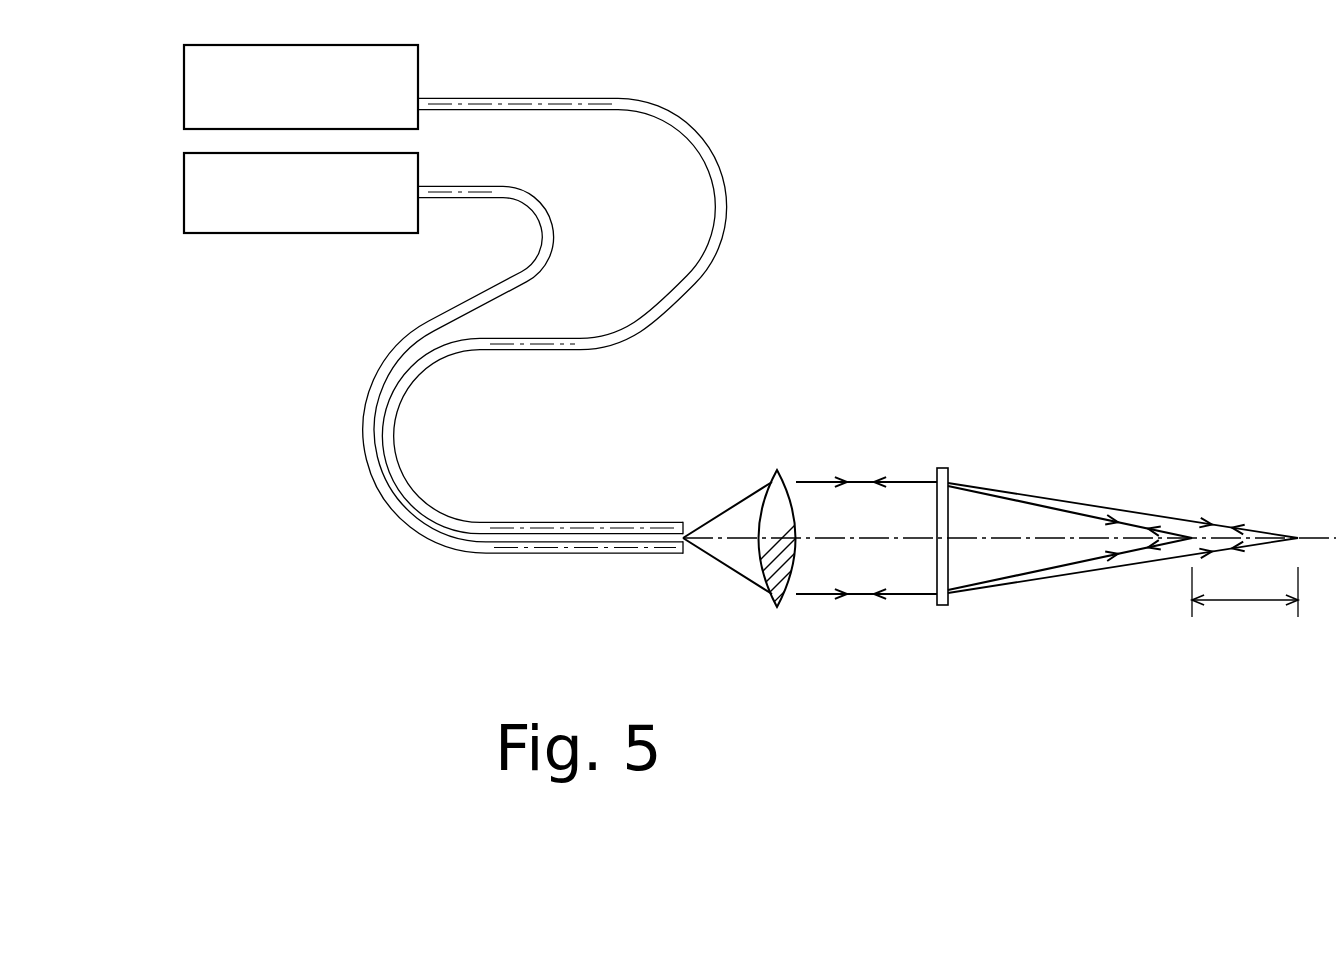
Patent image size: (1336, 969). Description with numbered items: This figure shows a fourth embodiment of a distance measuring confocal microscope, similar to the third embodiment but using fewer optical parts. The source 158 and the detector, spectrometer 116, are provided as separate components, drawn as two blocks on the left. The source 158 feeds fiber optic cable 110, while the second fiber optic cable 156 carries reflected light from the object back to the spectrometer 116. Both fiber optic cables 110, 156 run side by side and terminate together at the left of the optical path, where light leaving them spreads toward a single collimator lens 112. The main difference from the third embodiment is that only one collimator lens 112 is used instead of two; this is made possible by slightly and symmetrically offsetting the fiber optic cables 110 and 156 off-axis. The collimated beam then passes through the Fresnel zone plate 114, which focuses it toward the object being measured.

The fiber optic cable 110 is at (728, 217).
The second fiber optic cable 156 is at (560, 554).
The source 158 is at (334, 106).
The spectrometer 116 is at (334, 212).
The collimator lens 112 is at (777, 608).
The Fresnel zone plate 114 is at (942, 606).